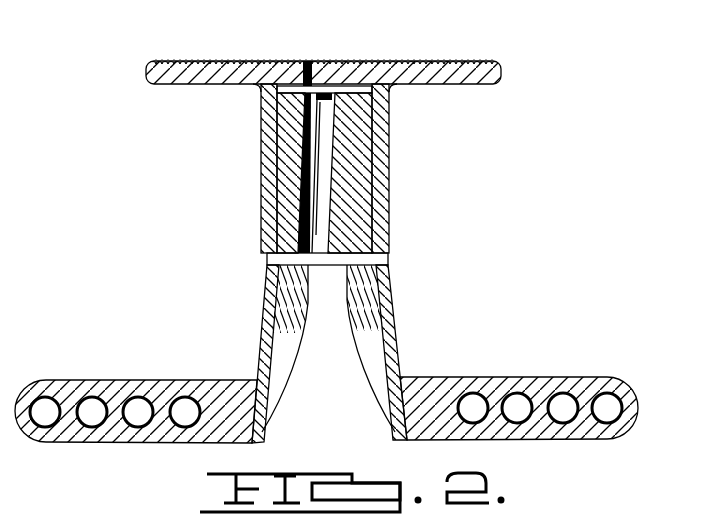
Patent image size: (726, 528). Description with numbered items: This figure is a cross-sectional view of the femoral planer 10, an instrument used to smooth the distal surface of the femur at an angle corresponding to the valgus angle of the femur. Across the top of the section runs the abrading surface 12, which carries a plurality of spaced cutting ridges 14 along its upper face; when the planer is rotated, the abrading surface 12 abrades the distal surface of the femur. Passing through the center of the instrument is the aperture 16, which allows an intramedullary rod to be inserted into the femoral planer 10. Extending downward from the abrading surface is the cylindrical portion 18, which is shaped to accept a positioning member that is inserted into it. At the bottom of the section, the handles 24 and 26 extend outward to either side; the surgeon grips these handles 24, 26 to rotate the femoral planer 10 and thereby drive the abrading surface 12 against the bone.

The femoral planer 10 is at (520, 209).
The abrading surface 12 is at (498, 62).
The cutting ridges 14 is at (437, 61).
The aperture 16 is at (318, 192).
The cylindrical portion 18 is at (390, 147).
The handle 24 is at (530, 377).
The handle 26 is at (127, 380).